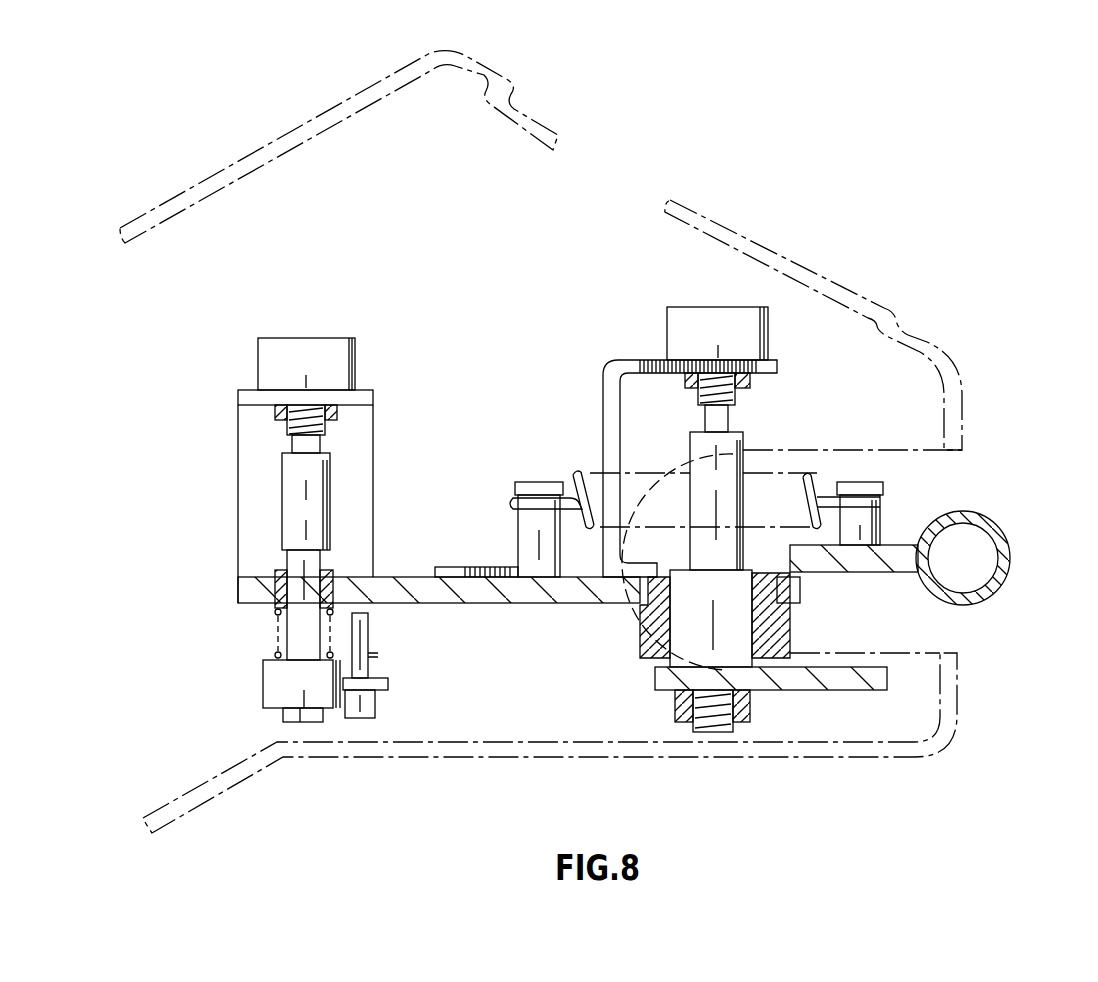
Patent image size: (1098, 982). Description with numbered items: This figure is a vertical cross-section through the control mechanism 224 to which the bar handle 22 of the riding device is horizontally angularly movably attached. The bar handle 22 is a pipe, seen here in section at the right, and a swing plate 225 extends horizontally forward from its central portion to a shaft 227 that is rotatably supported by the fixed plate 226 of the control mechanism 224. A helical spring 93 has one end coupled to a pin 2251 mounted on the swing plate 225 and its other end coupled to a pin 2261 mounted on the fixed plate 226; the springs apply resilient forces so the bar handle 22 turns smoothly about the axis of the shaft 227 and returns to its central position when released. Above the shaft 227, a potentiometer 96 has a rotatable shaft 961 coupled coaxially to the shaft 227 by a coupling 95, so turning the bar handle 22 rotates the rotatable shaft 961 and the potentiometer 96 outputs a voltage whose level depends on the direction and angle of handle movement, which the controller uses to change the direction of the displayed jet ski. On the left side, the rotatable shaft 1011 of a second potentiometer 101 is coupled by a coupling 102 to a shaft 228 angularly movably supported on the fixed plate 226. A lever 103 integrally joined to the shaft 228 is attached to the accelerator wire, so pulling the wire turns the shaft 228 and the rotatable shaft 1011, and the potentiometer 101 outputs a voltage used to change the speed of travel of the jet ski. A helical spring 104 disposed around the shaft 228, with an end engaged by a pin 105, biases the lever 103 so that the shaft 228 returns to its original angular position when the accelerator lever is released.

The potentiometer 101 is at (336, 343).
The rotatable shaft 1011 is at (315, 445).
The coupling 102 is at (327, 507).
The helical spring 104 is at (270, 633).
The pin 105 is at (370, 627).
The lever 103 is at (383, 688).
The shaft 228 is at (270, 683).
The fixed plate 226 is at (482, 597).
The pin 2261 is at (537, 485).
The control mechanism 224 is at (600, 622).
The shaft 227 is at (730, 627).
The swing plate 225 is at (897, 545).
The pin 2251 is at (858, 485).
The helical spring 93 is at (817, 495).
The coupling 95 is at (742, 440).
The potentiometer 96 is at (768, 322).
The rotatable shaft 961 is at (705, 418).
The bar handle 22 is at (1003, 545).